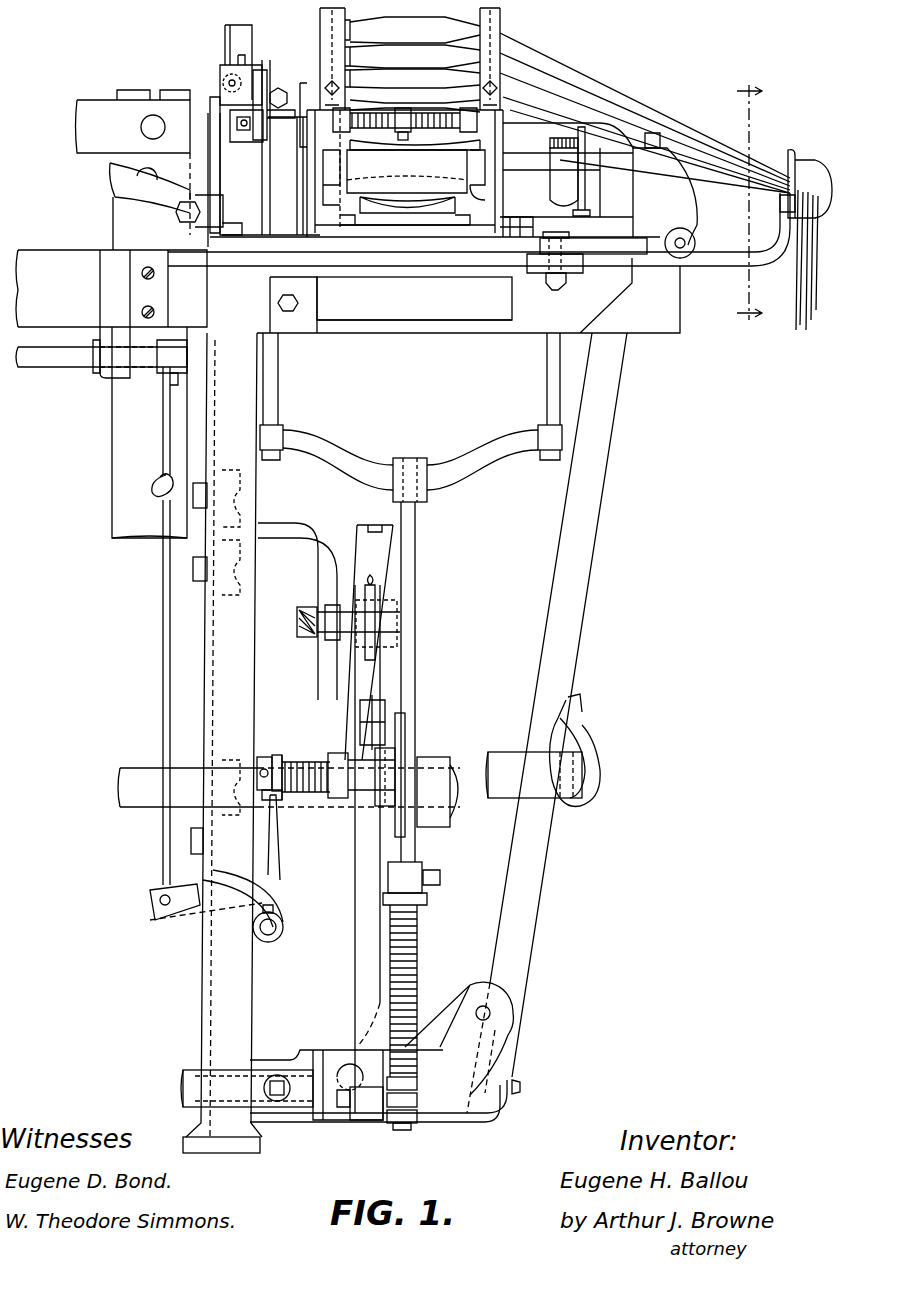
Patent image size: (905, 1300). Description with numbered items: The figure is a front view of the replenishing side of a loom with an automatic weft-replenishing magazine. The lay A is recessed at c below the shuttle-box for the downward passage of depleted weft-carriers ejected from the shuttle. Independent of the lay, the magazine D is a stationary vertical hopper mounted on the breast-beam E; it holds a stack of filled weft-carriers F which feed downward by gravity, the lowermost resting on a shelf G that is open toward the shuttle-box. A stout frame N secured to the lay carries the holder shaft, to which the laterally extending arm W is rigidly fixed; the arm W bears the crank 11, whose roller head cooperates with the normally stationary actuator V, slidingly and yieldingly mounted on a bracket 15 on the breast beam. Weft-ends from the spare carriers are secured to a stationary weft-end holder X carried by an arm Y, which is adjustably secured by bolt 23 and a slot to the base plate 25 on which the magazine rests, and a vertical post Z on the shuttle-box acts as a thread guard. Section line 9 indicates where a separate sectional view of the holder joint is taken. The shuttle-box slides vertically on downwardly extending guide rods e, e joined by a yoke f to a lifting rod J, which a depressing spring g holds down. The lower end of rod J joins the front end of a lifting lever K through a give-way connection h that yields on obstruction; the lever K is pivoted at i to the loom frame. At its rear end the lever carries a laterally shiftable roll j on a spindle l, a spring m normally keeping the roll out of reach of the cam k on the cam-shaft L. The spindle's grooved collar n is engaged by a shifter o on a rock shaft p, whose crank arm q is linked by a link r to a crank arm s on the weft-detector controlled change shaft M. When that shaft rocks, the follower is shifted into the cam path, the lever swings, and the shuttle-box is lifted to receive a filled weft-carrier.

The actuator V is at (238, 42).
The arm W is at (262, 78).
The crank 11 is at (276, 92).
The bracket 15 is at (213, 108).
The magazine D is at (500, 20).
The weft-carriers F is at (425, 62).
The frame N is at (287, 176).
The shelf G is at (404, 169).
The vertical post Z is at (583, 187).
The breast-beam E is at (70, 268).
The change shaft M is at (52, 355).
The crank arm s is at (163, 430).
The link r is at (163, 660).
The crank arm q is at (172, 908).
The rock shaft p is at (268, 940).
The shifter o is at (276, 855).
The lay A is at (645, 313).
The recess c is at (395, 300).
The arm Y is at (718, 260).
The base plate 25 is at (635, 246).
The bolt 23 is at (552, 290).
The guide rods e is at (272, 378).
The yoke f is at (478, 468).
The lifting rod J is at (414, 592).
The depressing spring g is at (416, 925).
The give-way connection h is at (362, 898).
The pivot i is at (298, 628).
The lifting lever K is at (346, 706).
The cam-shaft L is at (140, 780).
The grooved collar n is at (270, 760).
The spindle l is at (308, 760).
The spring m is at (310, 800).
The roll j is at (385, 792).
The cam k is at (402, 730).
The weft-end holder X is at (830, 190).
The section line 9 is at (749, 209).